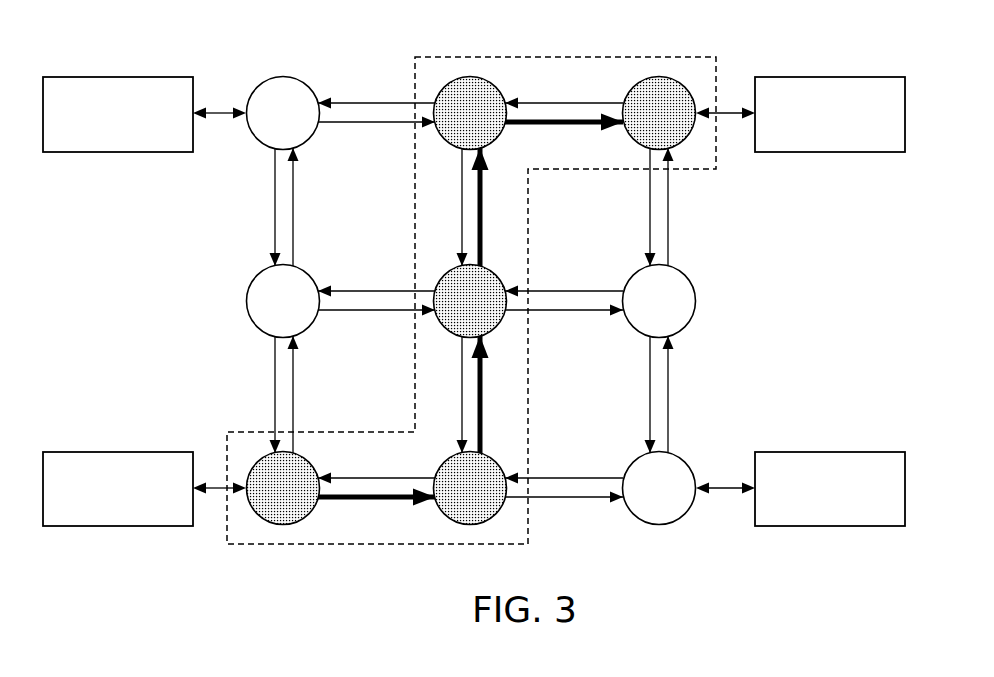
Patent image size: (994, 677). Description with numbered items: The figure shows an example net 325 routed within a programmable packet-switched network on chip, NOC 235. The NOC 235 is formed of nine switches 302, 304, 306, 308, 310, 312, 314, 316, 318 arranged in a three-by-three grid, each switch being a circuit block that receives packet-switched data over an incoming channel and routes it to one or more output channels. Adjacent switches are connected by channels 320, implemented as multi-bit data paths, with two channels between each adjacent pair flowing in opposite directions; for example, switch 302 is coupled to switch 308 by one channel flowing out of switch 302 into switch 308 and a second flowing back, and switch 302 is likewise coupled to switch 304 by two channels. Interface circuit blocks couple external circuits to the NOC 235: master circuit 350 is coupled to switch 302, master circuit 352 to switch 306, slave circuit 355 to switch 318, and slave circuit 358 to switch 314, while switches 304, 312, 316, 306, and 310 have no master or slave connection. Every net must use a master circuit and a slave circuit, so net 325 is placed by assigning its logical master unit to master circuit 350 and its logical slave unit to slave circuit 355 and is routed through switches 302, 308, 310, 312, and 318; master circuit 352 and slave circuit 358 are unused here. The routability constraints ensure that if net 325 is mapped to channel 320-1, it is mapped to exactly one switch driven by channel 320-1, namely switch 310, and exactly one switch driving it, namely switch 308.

The NOC 235 is at (453, 272).
The net 325 is at (583, 56).
The channels 320 is at (274, 207).
The channel 320-1 is at (483, 413).
The switch 302 is at (283, 488).
The switch 304 is at (283, 301).
The switch 306 is at (283, 113).
The switch 308 is at (470, 488).
The switch 310 is at (470, 301).
The switch 312 is at (470, 113).
The switch 314 is at (659, 488).
The switch 316 is at (659, 301).
The switch 318 is at (659, 113).
The master circuit 350 is at (144, 489).
The master circuit 352 is at (144, 114).
The slave circuit 355 is at (800, 114).
The slave circuit 358 is at (800, 489).